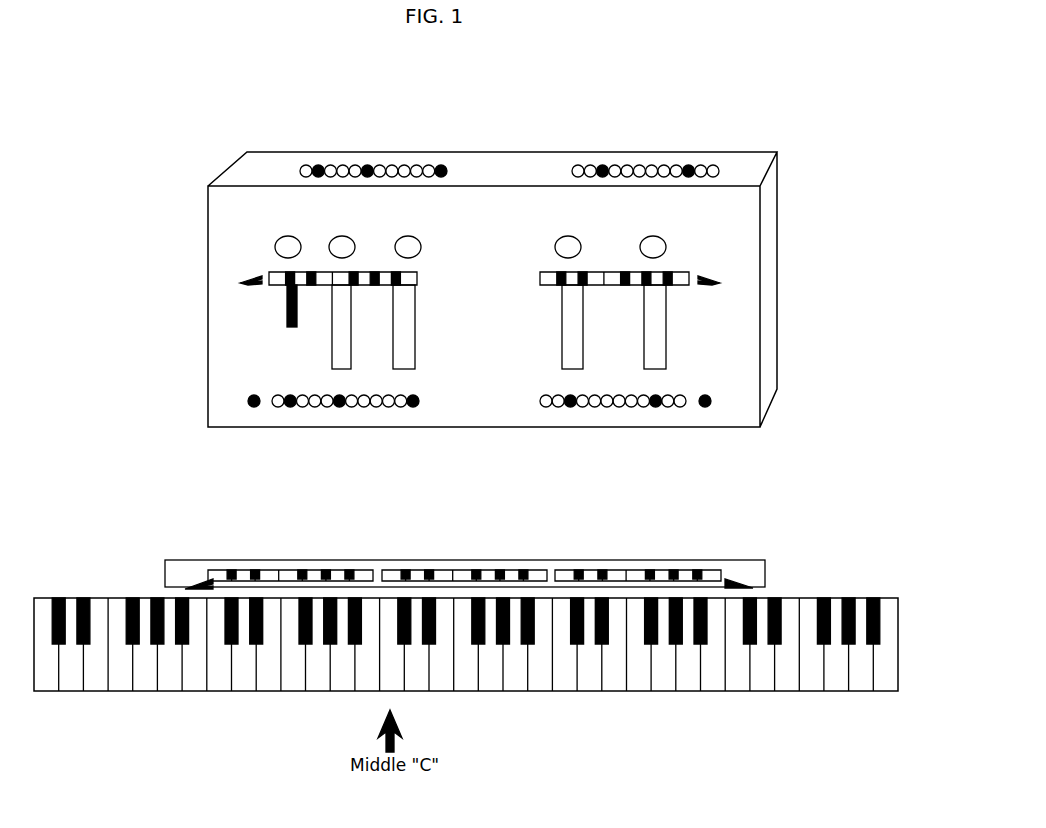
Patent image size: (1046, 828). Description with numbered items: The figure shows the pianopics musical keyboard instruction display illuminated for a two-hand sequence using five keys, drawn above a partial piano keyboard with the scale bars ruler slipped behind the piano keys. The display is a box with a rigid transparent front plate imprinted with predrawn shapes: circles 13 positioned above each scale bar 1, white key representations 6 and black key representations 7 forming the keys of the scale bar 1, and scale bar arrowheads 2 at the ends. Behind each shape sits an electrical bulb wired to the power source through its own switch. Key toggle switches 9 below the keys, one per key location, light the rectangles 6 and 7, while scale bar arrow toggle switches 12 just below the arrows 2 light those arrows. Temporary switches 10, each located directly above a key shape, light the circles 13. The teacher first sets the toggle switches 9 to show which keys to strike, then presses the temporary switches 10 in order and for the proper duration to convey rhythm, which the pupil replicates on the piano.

The scale bar 1 is at (493, 283).
The scale bar arrowhead 2 is at (246, 283).
The white key representation 6 is at (570, 357).
The black key representation 7 is at (291, 329).
The key toggle switch 9 is at (593, 409).
The tone length indicator temporary switch 10 is at (604, 167).
The scale bar arrow toggle switch 12 is at (703, 409).
The timing circle diagram 13 is at (563, 247).